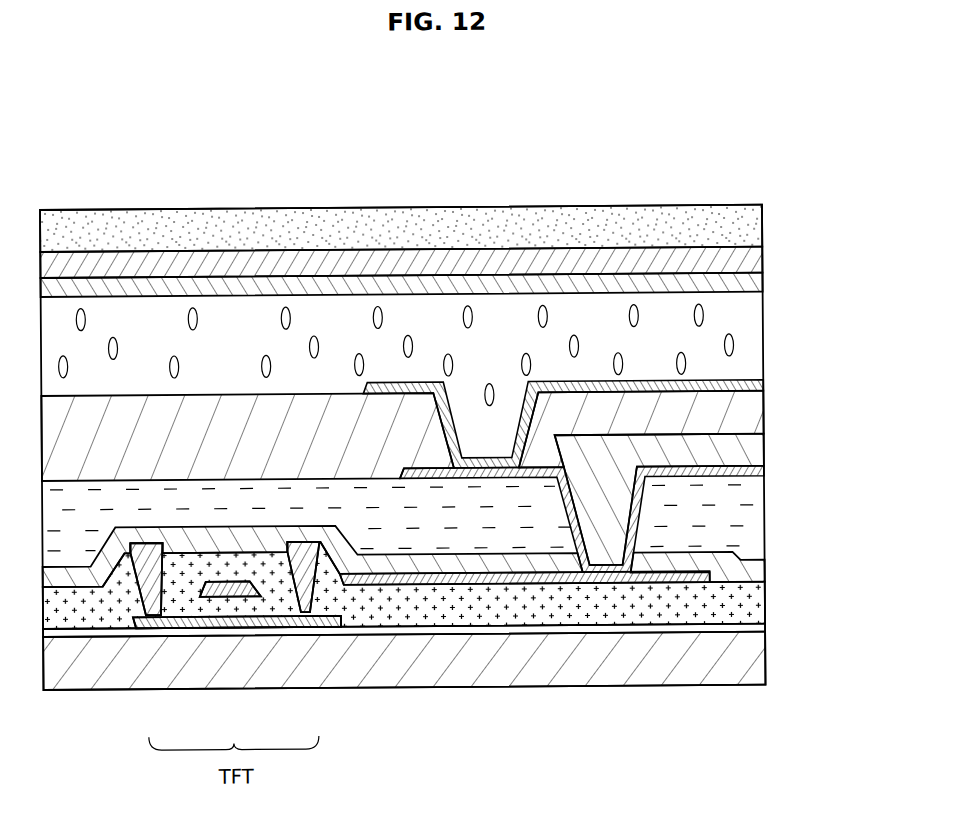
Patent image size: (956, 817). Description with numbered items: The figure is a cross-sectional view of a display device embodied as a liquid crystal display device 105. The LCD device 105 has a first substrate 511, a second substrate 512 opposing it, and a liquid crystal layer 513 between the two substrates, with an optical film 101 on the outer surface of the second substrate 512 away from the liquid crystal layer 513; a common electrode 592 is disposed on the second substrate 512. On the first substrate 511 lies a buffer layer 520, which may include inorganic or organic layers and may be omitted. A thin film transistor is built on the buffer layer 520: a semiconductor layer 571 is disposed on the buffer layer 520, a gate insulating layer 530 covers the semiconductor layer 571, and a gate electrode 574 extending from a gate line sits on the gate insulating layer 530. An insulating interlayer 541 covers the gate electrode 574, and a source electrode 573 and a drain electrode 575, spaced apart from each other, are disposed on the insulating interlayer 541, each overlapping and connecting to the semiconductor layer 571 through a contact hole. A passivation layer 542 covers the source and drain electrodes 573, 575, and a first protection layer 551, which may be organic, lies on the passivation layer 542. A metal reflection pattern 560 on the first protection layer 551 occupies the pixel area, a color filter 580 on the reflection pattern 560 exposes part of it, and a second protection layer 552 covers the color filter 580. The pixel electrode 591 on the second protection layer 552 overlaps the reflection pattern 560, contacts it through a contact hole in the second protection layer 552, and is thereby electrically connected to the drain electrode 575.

The liquid crystal display device 105 is at (112, 174).
The optical film 101 is at (757, 236).
The second substrate 512 is at (757, 265).
The common electrode 592 is at (760, 287).
The liquid crystal layer 513 is at (498, 338).
The pixel electrode 591 is at (757, 388).
The second protection layer 552 is at (752, 417).
The color filter 580 is at (752, 455).
The reflection pattern 560 is at (754, 475).
The first protection layer 551 is at (752, 530).
The passivation layer 542 is at (752, 582).
The insulating interlayer 541 is at (754, 613).
The buffer layer 520 is at (754, 634).
The first substrate 511 is at (752, 668).
The gate insulating layer 530 is at (235, 541).
The source electrode 573 is at (143, 608).
The semiconductor layer 571 is at (200, 626).
The gate electrode 574 is at (237, 599).
The drain electrode 575 is at (303, 608).